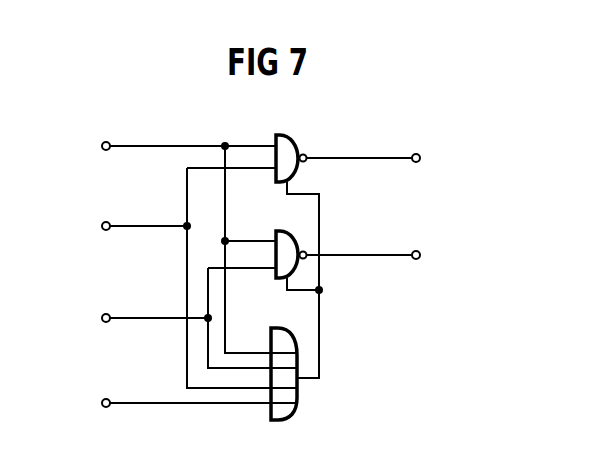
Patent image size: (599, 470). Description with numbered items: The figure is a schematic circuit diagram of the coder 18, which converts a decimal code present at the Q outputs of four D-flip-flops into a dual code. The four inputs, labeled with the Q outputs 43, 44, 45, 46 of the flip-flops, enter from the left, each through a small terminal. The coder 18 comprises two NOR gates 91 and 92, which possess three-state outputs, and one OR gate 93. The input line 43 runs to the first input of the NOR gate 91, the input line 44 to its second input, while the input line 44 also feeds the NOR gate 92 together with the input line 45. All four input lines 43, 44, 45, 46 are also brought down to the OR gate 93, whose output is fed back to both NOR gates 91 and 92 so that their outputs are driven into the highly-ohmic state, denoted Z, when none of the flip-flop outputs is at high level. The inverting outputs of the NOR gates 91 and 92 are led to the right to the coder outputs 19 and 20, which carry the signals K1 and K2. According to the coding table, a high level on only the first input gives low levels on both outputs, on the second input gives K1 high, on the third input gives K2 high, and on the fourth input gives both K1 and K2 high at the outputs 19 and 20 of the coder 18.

The coder 18 is at (556, 236).
The output 19 is at (377, 151).
The output 20 is at (377, 248).
The flip-flop 43 output Q 43 is at (159, 145).
The flip-flop 44 output Q 44 is at (115, 225).
The flip-flop 45 output Q 45 is at (130, 317).
The flip-flop 46 output Q 46 is at (173, 405).
The NOR gate 91 is at (257, 112).
The NOR gate 92 is at (291, 241).
The OR gate 93 is at (333, 421).